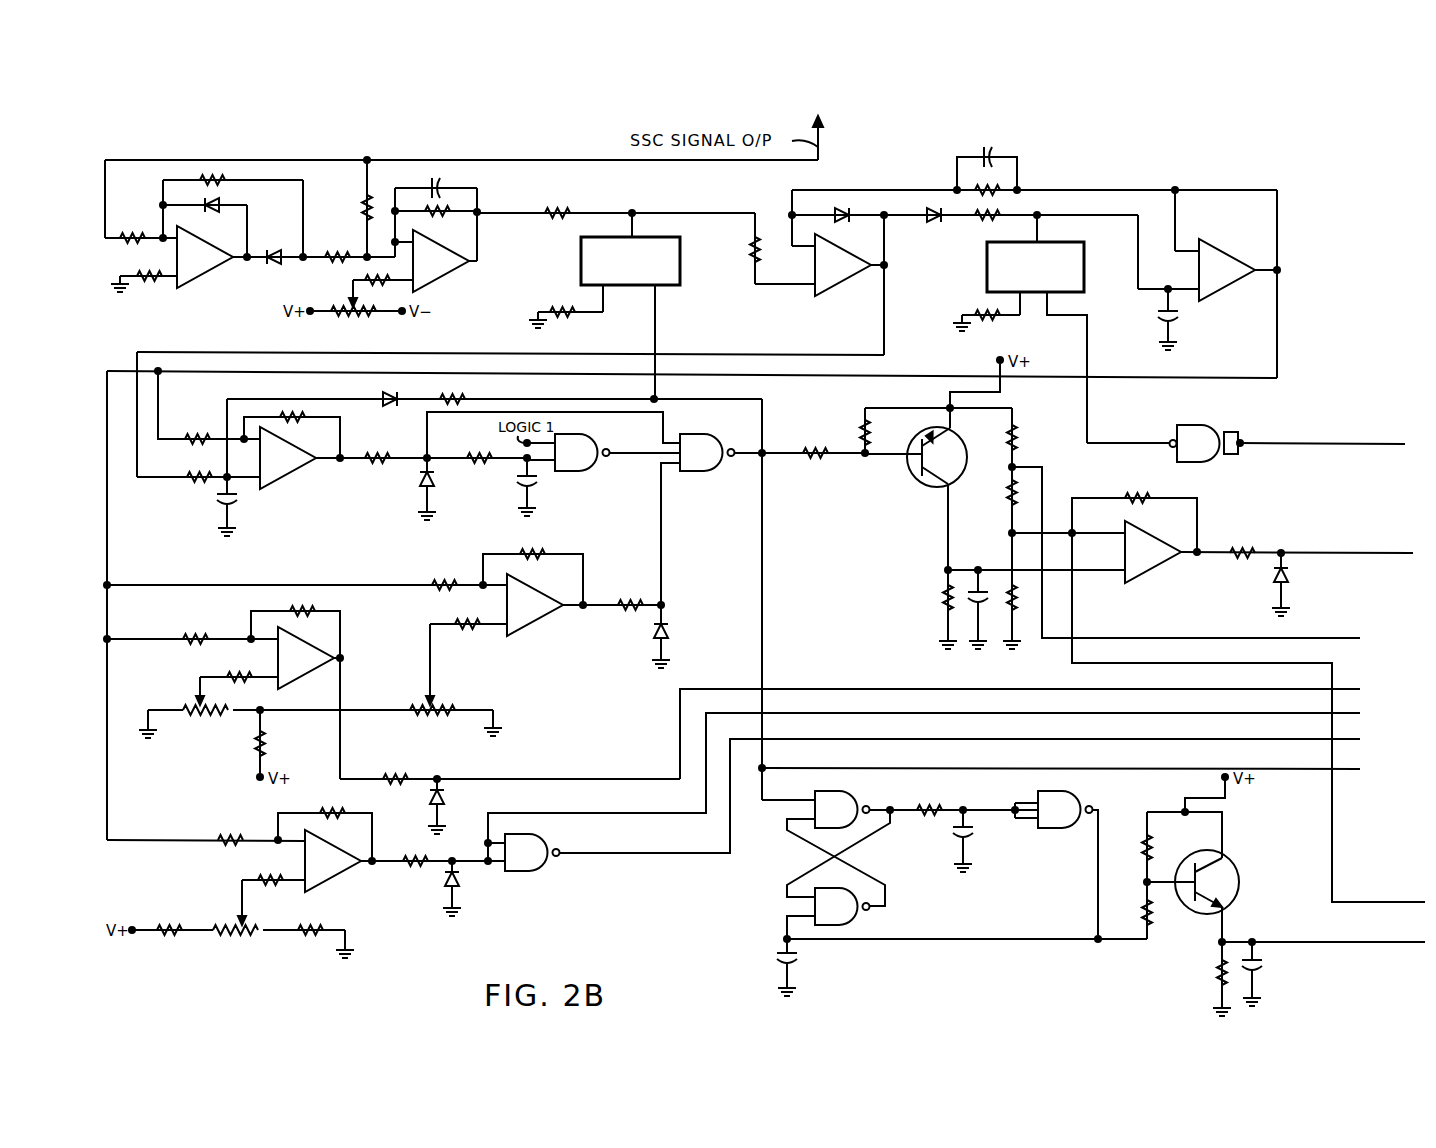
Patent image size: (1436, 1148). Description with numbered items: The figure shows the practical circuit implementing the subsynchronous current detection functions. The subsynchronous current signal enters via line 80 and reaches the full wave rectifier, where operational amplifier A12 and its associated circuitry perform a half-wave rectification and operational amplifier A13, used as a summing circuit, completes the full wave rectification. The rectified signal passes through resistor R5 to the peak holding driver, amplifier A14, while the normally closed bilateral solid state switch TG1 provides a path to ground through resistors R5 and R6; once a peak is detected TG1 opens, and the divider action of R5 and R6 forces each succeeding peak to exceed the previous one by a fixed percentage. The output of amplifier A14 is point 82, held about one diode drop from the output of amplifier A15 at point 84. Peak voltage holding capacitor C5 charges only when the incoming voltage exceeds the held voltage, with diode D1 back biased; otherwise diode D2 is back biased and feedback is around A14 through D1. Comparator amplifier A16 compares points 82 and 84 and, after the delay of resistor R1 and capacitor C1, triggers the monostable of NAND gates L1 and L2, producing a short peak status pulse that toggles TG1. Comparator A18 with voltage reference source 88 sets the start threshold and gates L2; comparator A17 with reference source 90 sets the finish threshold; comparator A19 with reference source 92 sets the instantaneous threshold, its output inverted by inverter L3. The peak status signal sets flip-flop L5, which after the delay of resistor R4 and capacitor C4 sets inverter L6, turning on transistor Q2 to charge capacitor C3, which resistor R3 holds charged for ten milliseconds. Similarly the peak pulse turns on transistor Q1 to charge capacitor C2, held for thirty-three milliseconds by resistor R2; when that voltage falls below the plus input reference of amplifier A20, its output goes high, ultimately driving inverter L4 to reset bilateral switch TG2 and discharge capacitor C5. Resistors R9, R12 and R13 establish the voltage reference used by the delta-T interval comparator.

The line 80 is at (521, 160).
The point 82 is at (888, 270).
The point 84 is at (1281, 271).
The voltage reference source 88 is at (437, 714).
The voltage reference source 90 is at (192, 708).
The voltage reference source 92 is at (238, 920).
The operational amplifier A12 is at (205, 257).
The operational amplifier A13 is at (441, 261).
The amplifier A14 is at (843, 265).
The amplifier A15 is at (1227, 270).
The comparator amplifier A16 is at (288, 458).
The comparator A17 is at (306, 658).
The comparator A18 is at (535, 605).
The comparator A19 is at (333, 861).
The amplifier A20 is at (1153, 552).
The bilateral solid state switch TG1 is at (630, 261).
The bilateral switch TG2 is at (1035, 267).
The resistor R1 is at (480, 466).
The resistor R2 is at (942, 597).
The resistor R3 is at (1217, 970).
The resistor R4 is at (922, 816).
The resistor R5 is at (560, 212).
The resistor R6 is at (566, 318).
The resistor R9 is at (1018, 430).
The resistor R12 is at (1009, 492).
The resistor R13 is at (1018, 616).
The capacitor C1 is at (537, 480).
The capacitor C2 is at (968, 620).
The capacitor C3 is at (1266, 968).
The capacitor C4 is at (976, 832).
The peak voltage holding capacitor C5 is at (1158, 317).
The diode D1 is at (843, 224).
The diode D2 is at (932, 225).
The transistor Q1 is at (912, 466).
The transistor Q2 is at (1240, 883).
The NAND gate L1 is at (582, 452).
The NAND gate L2 is at (707, 452).
The inverter L3 is at (532, 852).
The inverter L4 is at (1165, 443).
The flip-flop L5 is at (805, 848).
The inverter L6 is at (1065, 809).